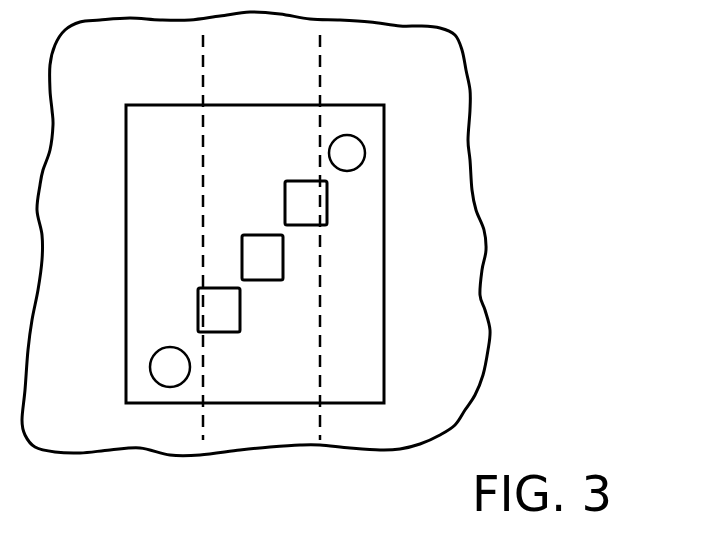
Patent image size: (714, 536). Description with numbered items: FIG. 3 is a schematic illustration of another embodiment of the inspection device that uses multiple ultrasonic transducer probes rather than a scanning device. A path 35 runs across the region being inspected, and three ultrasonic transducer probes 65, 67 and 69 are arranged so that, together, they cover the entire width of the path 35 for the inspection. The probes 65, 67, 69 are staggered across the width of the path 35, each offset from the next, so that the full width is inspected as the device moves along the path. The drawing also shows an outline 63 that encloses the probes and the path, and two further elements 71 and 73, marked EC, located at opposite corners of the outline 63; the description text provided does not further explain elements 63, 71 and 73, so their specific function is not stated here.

The path 35 is at (186, 142).
The substrate / inspection area 63 is at (385, 333).
The transducer probe 65 is at (197, 298).
The transducer probe 67 is at (258, 235).
The transducer probe 69 is at (298, 181).
The eddy current probe EC 71 is at (152, 356).
The eddy current probe EC 73 is at (363, 162).